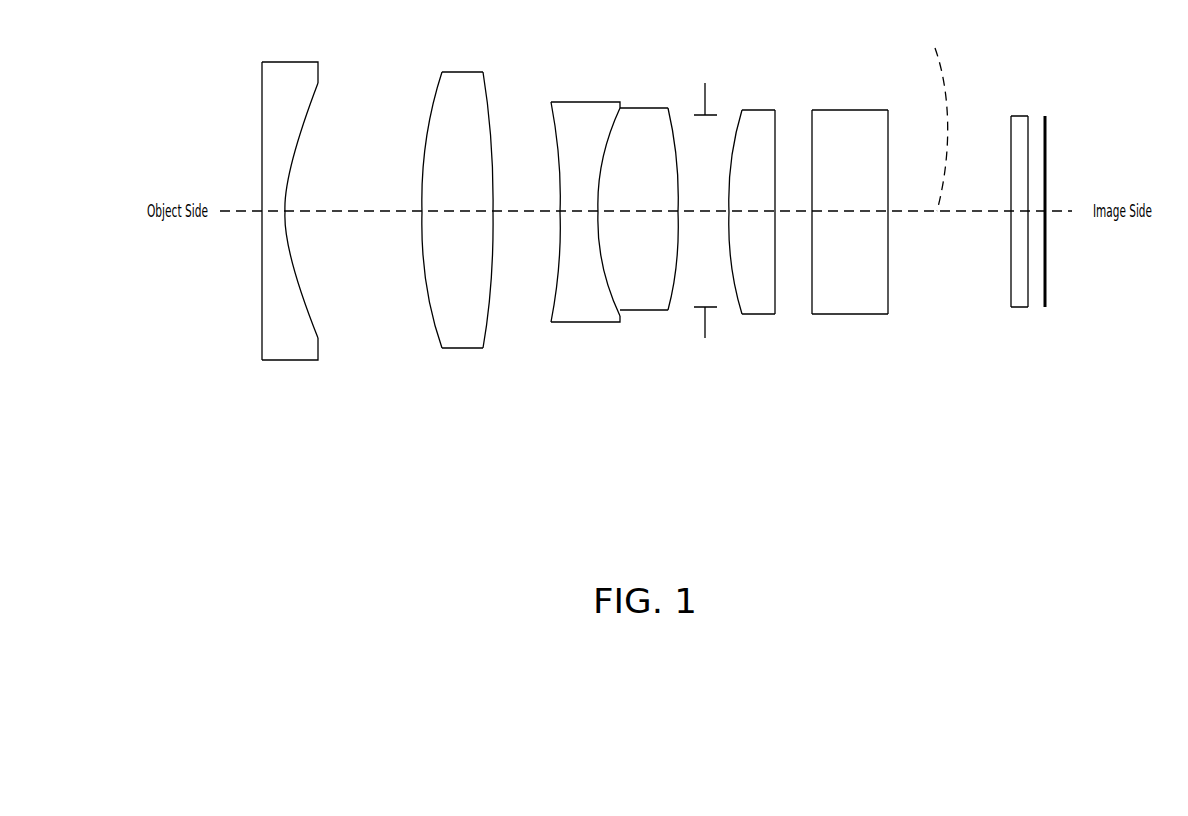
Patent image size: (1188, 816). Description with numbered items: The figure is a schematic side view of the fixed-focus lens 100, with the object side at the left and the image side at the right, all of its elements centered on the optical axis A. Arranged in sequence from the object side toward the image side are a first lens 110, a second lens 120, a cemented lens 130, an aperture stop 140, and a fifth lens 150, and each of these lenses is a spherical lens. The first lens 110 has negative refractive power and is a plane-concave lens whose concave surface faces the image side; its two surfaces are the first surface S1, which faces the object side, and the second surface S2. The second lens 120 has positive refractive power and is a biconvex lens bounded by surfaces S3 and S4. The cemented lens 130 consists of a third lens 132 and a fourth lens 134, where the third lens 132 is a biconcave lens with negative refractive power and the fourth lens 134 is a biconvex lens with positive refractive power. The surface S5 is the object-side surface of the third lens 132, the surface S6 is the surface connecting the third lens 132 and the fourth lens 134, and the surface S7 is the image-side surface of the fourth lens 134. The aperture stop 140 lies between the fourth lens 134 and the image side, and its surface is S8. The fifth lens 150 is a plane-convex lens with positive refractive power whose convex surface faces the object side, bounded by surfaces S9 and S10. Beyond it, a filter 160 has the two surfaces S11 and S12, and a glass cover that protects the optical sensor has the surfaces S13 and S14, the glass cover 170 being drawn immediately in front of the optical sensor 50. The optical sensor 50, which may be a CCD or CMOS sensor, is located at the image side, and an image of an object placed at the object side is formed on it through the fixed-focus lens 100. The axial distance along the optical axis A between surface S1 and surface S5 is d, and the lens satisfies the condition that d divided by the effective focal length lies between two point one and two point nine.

The fixed-focus lens 100 is at (1133, 457).
The first lens 110 is at (291, 219).
The second lens 120 is at (457, 219).
The cemented lens 130 is at (607, 240).
The third lens 132 is at (578, 219).
The fourth lens 134 is at (649, 219).
The aperture stop 140 is at (713, 219).
The fifth lens 150 is at (762, 219).
The filter 160 is at (852, 219).
The filter/cover glass 170 is at (1012, 219).
The optical sensor 50 is at (1044, 308).
The optical axis A is at (938, 117).
The first surface S1 is at (260, 100).
The second surface S2 is at (305, 117).
The third surface S3 is at (436, 100).
The fourth surface S4 is at (487, 95).
The fifth surface S5 is at (551, 123).
The sixth surface S6 is at (612, 128).
The seventh surface S7 is at (669, 127).
The eighth surface S8 is at (701, 97).
The ninth surface S9 is at (739, 116).
The tenth surface S10 is at (778, 119).
The eleventh surface S11 is at (810, 122).
The twelfth surface S12 is at (890, 122).
The thirteenth surface S13 is at (1008, 143).
The fourteenth surface S14 is at (1031, 137).